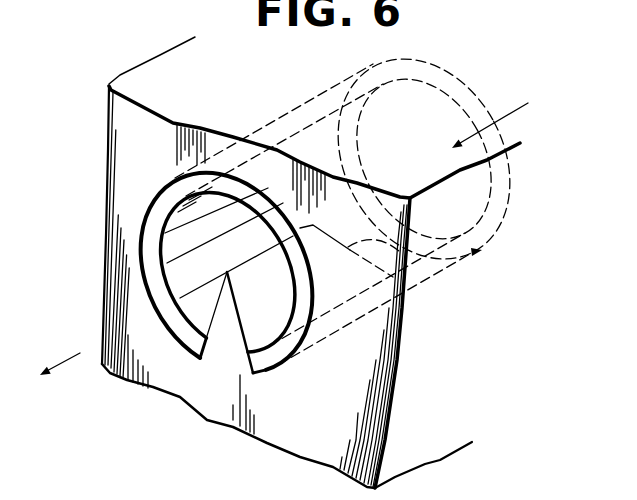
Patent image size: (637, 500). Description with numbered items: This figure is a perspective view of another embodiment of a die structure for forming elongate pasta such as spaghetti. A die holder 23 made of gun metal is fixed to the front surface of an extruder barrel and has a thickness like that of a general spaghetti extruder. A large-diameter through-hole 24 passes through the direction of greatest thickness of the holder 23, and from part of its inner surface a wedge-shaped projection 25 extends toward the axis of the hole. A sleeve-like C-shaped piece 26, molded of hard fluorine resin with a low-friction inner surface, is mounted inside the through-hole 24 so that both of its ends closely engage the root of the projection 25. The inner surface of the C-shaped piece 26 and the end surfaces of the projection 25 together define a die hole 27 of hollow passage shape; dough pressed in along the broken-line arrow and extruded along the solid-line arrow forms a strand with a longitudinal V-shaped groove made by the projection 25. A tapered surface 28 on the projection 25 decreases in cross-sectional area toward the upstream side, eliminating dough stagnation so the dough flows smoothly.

The die holder 23 is at (123, 160).
The through-hole 24 is at (177, 293).
The projection 25 is at (215, 302).
The C-shaped piece 26 is at (157, 291).
The die hole 27 is at (183, 242).
The tapered surface 28 is at (416, 266).